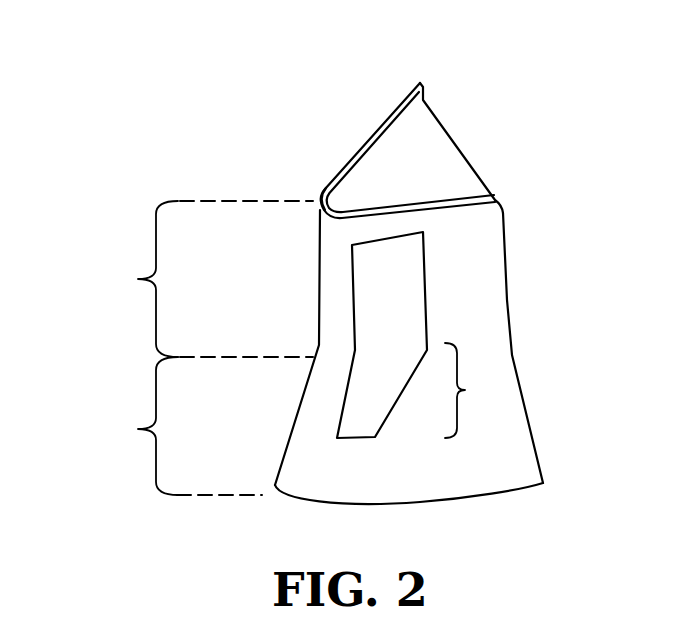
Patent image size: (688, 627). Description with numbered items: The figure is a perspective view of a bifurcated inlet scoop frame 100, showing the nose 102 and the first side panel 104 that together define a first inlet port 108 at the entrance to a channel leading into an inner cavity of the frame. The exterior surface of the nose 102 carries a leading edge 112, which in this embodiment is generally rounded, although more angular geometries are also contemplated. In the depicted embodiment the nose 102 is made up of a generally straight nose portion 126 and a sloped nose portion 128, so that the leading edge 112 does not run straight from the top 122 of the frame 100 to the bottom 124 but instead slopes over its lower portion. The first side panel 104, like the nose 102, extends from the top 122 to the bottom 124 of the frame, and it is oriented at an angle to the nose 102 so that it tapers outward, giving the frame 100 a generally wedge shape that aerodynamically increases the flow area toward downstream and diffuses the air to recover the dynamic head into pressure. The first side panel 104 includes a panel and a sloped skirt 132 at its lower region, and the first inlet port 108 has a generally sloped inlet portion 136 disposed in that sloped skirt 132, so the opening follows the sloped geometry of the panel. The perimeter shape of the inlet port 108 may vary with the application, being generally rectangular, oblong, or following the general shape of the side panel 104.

The bifurcated inlet scoop frame 100 is at (205, 145).
The nose 102 is at (332, 258).
The first side panel 104 is at (480, 302).
The first inlet port 108 is at (385, 307).
The leading edge 112 is at (330, 287).
The top 122 is at (333, 178).
The bottom 124 is at (302, 488).
The generally straight nose portion 126 is at (200, 279).
The sloped nose portion 128 is at (177, 426).
The sloped skirt 132 is at (493, 437).
The sloped inlet portion 136 is at (481, 390).